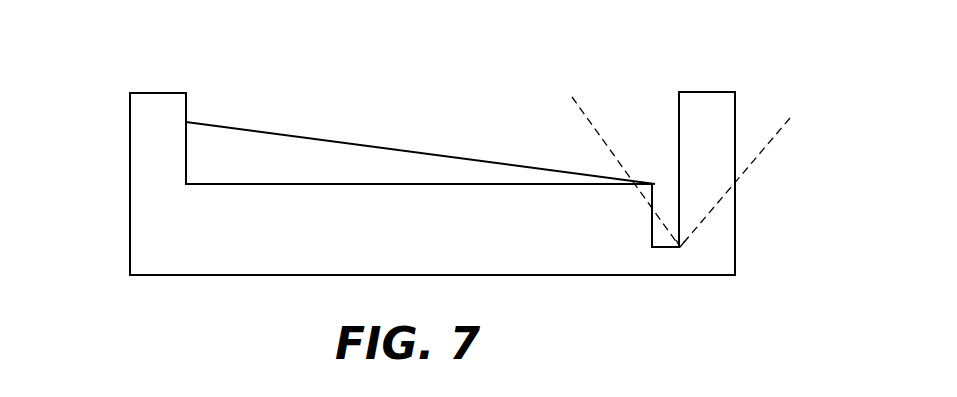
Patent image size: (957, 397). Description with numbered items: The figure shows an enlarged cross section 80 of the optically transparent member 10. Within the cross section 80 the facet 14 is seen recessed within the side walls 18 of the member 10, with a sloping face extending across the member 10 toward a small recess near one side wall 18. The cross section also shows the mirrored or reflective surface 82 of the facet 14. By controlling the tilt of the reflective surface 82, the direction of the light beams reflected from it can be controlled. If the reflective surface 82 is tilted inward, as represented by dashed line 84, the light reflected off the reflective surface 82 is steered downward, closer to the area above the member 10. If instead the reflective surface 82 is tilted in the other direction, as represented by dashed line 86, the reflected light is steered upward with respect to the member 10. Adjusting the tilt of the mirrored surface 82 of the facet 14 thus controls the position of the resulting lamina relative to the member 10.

The member 10 is at (428, 249).
The facet 14 is at (263, 148).
The side walls 18 is at (145, 157).
The cross section 80 is at (170, 300).
The reflective surface 82 is at (653, 225).
The dashed line 84 is at (578, 104).
The dashed line 86 is at (789, 124).